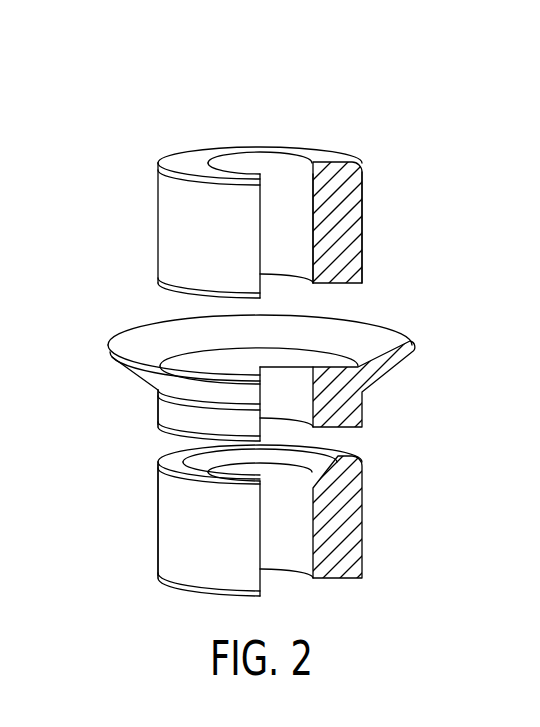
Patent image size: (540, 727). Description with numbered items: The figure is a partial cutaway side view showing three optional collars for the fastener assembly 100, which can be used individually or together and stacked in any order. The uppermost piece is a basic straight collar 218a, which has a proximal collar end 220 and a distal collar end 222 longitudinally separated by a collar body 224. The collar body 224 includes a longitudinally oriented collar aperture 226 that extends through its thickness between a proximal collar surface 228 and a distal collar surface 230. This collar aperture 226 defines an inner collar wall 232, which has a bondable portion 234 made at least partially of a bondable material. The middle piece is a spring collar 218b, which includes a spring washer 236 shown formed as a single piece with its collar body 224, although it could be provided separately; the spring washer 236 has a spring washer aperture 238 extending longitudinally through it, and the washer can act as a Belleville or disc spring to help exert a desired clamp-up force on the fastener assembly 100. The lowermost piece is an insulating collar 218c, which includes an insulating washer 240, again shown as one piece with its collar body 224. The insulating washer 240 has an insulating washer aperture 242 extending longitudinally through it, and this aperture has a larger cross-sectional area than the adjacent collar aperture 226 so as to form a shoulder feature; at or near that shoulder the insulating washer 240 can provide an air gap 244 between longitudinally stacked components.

The fastener assembly 100 is at (472, 82).
The proximal collar end 220 is at (378, 142).
The straight collar 218a is at (379, 227).
The distal collar end 222 is at (379, 282).
The collar body 224 is at (157, 230).
The collar aperture 226 is at (268, 168).
The proximal collar surface 228 is at (196, 144).
The distal collar surface 230 is at (177, 292).
The inner collar wall 232 is at (274, 246).
The bondable portion 234 is at (297, 200).
The spring washer 236 is at (88, 349).
The spring washer aperture 238 is at (386, 342).
The spring collar 218b is at (375, 393).
The insulating washer 240 is at (384, 466).
The insulating collar 218c is at (375, 529).
The insulating washer aperture 242 is at (333, 455).
The air gap 244 is at (190, 446).